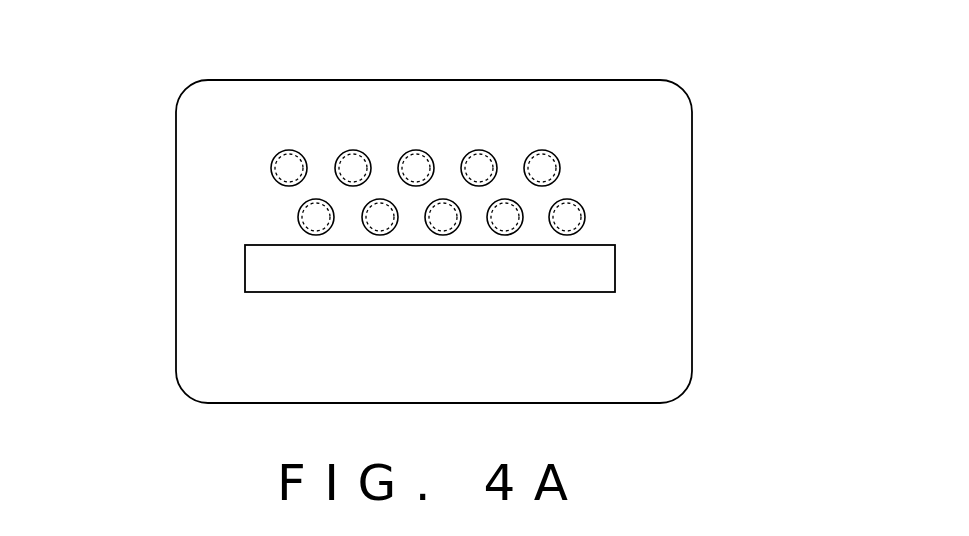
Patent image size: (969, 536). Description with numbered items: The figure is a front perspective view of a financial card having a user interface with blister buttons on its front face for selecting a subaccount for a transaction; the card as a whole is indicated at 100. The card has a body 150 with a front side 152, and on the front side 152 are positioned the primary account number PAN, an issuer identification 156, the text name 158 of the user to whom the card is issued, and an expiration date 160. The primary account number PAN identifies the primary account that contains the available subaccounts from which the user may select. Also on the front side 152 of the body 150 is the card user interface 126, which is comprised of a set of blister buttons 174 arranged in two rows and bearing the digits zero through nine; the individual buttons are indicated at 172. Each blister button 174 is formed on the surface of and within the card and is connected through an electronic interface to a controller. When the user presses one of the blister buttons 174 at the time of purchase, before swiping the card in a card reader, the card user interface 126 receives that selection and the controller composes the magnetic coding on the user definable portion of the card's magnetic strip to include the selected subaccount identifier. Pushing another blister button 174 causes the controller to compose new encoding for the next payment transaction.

The transaction card 100 is at (609, 67).
The body 150 is at (176, 167).
The front side 152 is at (650, 103).
The issuer identification 156 is at (298, 100).
The digit key 172 is at (272, 178).
The card user interface 126 is at (593, 157).
The blister buttons 174 is at (610, 200).
The primary account number PAN is at (545, 281).
The text name 158 is at (277, 362).
The expiration date 160 is at (480, 353).